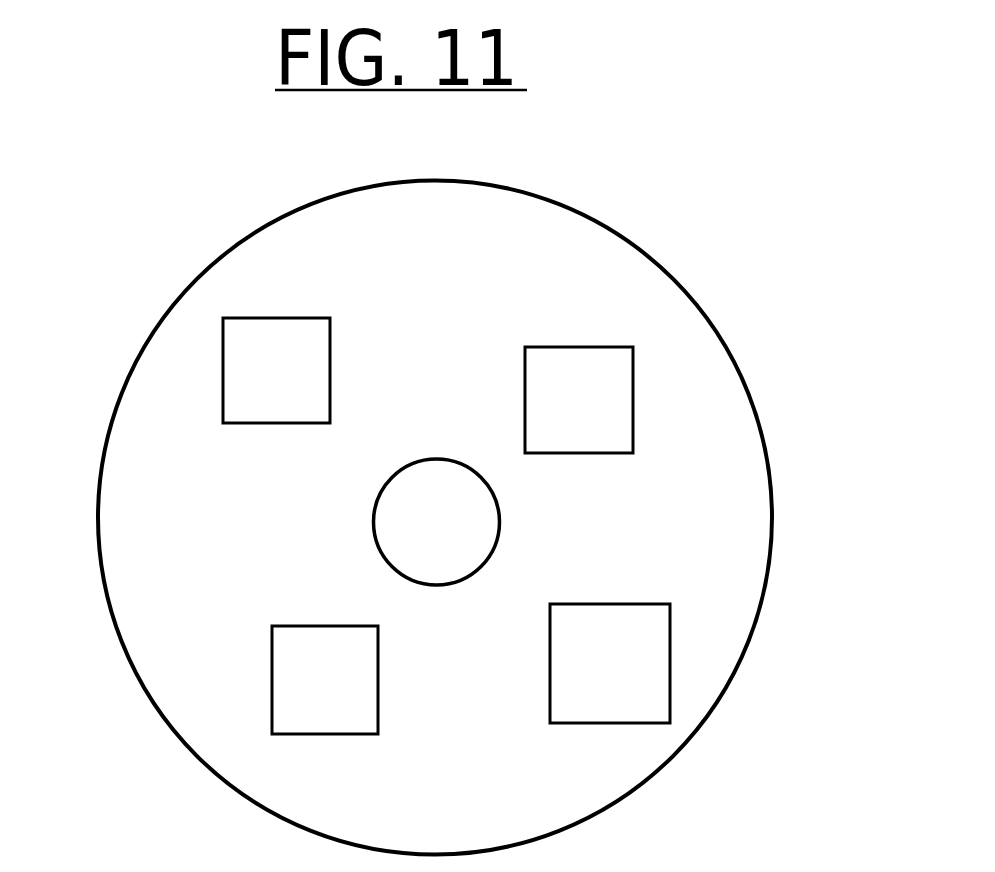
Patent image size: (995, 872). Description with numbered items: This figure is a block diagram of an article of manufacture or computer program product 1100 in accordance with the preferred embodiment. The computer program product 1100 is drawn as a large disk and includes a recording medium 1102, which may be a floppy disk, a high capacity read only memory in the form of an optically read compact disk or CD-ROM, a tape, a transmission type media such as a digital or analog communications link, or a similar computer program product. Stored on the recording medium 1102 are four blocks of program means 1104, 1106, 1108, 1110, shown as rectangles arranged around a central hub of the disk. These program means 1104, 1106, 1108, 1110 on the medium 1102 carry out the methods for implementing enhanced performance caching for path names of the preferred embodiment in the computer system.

The computer program product 1100 is at (723, 298).
The recording medium 1102 is at (157, 323).
The program means 1104 is at (579, 400).
The program means 1106 is at (610, 663).
The program means 1108 is at (325, 680).
The program means 1110 is at (276, 370).